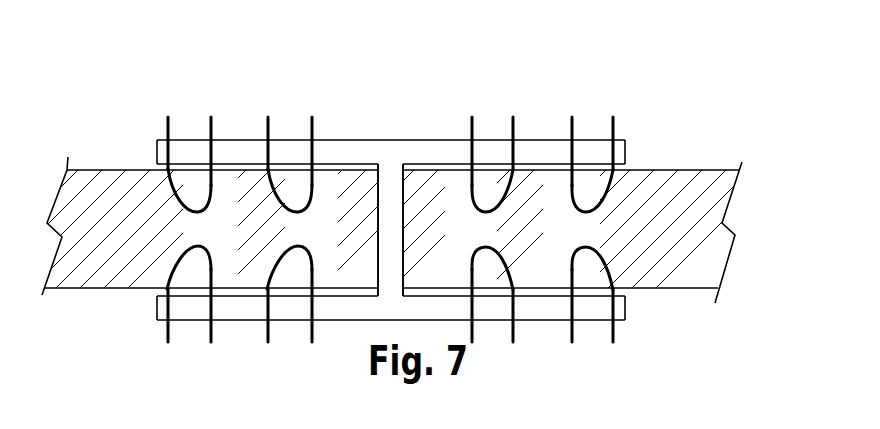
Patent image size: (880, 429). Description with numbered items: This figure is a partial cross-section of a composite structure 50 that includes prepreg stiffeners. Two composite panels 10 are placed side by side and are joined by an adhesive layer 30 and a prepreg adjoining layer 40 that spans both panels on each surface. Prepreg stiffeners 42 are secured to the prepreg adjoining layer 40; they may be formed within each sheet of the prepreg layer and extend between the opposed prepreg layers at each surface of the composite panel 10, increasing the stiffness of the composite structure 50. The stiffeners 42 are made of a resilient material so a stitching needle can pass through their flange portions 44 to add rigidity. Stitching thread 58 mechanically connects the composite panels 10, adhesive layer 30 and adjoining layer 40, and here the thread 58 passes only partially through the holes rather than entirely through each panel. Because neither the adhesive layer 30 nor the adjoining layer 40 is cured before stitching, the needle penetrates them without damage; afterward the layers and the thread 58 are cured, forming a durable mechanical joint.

The composite panel 10 is at (96, 129).
The adhesive layer 30 is at (626, 168).
The adjoining layer 40 is at (423, 152).
The prepreg stiffener 42 is at (391, 225).
The flange portion 44 is at (160, 150).
The composite structure 50 is at (402, 213).
The thread 58 is at (513, 128).